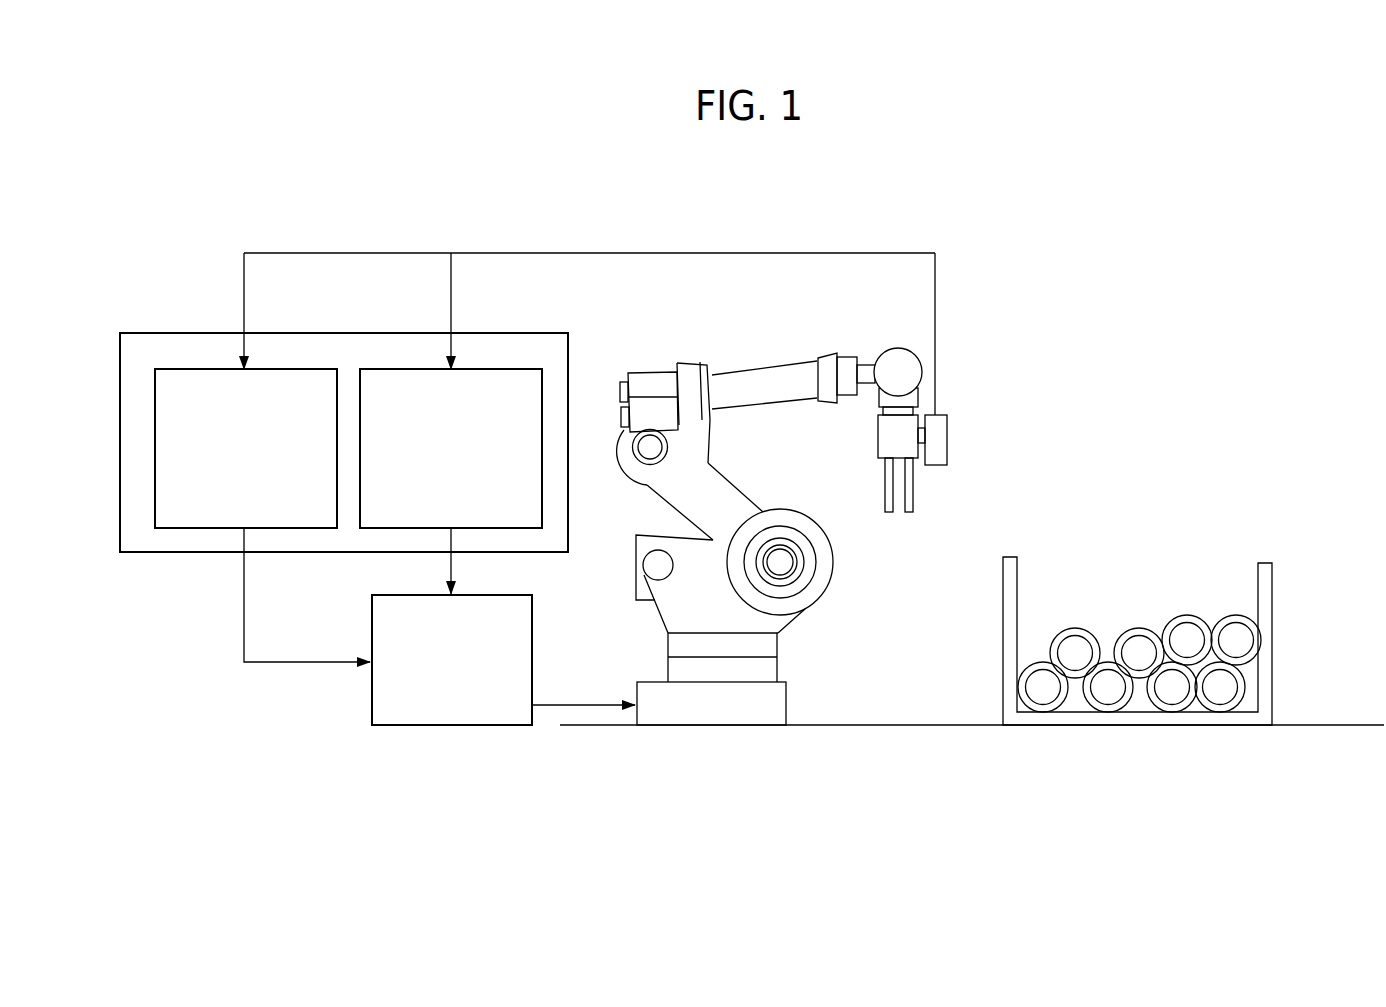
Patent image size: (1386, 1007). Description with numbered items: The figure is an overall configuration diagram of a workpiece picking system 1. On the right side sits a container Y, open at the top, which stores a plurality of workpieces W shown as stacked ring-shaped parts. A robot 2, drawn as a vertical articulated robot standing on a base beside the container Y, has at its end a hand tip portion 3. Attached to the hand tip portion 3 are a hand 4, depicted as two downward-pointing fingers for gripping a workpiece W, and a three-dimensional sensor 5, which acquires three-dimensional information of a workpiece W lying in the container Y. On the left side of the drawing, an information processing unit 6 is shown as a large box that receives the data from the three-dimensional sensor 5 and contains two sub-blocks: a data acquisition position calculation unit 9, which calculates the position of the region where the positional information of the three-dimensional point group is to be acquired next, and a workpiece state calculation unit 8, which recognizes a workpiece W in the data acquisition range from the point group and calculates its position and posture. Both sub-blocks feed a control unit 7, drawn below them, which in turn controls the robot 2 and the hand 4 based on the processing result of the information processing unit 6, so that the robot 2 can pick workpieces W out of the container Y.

The workpiece picking system 1 is at (1118, 283).
The robot 2 is at (739, 367).
The hand tip portion 3 is at (878, 436).
The hand 4 is at (913, 490).
The three-dimensional sensor 5 is at (948, 432).
The information processing unit 6 is at (170, 330).
The control unit 7 is at (460, 728).
The workpiece state calculation unit 8 is at (496, 368).
The data acquisition position calculation unit 9 is at (293, 368).
The workpiece W is at (1137, 628).
The container Y is at (1003, 640).